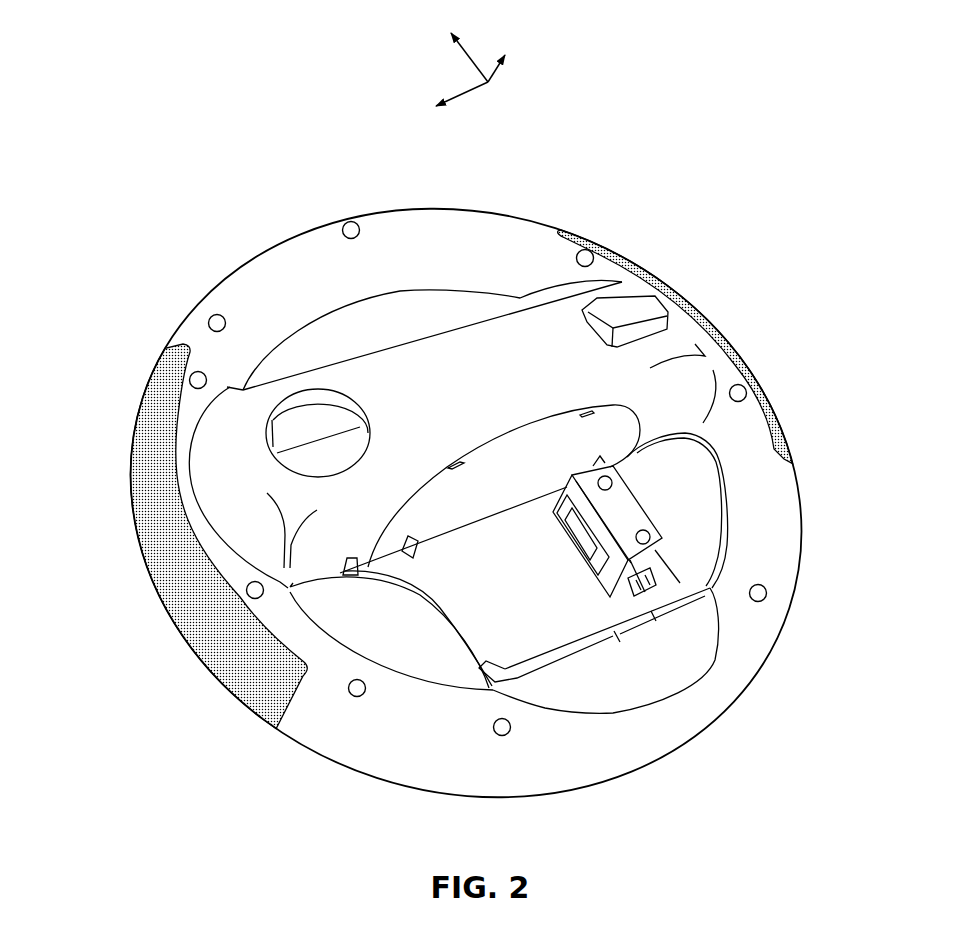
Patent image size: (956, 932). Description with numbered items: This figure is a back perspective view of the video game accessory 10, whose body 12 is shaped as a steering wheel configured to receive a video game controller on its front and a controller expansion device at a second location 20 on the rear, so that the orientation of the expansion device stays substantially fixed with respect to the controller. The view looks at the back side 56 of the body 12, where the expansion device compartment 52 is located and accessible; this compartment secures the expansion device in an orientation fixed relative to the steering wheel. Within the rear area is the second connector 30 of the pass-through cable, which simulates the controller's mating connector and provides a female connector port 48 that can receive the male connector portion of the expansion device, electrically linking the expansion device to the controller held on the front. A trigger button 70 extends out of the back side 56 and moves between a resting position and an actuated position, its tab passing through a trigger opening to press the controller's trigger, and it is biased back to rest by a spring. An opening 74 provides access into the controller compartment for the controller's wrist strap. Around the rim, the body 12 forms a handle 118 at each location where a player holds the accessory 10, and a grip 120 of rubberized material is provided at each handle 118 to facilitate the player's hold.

The video game accessory 10 is at (297, 156).
The body 12 is at (480, 384).
The second location 20 is at (487, 596).
The second connector 30 is at (553, 495).
The female connector port 48 is at (630, 633).
The expansion device compartment 52 is at (522, 574).
The back side 56 is at (542, 325).
The trigger button 70 is at (636, 310).
The opening 74 is at (308, 430).
The handle 118 is at (661, 242).
The grip 120 is at (152, 420).